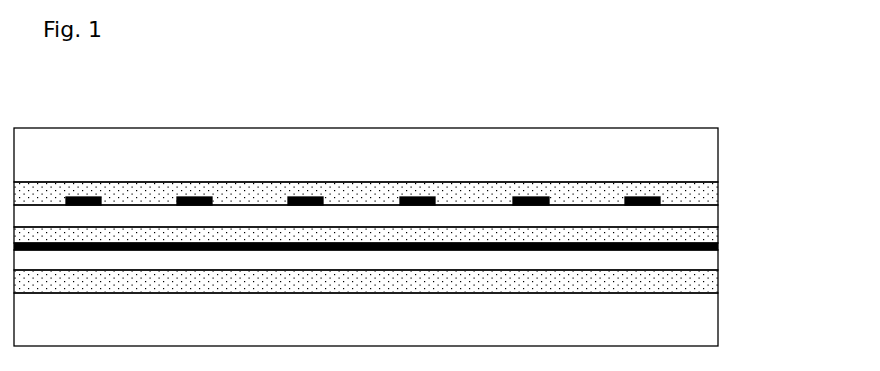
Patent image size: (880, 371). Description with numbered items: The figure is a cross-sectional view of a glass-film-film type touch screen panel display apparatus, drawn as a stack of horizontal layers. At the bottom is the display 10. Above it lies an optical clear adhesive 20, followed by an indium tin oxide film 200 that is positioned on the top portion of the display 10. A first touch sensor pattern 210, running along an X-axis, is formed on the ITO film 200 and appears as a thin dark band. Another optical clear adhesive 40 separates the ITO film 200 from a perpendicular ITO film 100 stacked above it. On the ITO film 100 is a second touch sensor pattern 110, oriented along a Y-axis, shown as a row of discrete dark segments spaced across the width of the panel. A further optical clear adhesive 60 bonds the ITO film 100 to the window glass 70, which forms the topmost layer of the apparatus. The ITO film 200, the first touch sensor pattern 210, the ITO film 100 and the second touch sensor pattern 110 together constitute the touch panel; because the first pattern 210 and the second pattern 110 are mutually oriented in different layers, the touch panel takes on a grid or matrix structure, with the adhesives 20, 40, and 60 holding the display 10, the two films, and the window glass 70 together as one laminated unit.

The display 10 is at (715, 318).
The optical clear adhesive 20 is at (715, 280).
The ITO film 200 is at (715, 258).
The first touch sensor pattern 210 is at (718, 244).
The optical clear adhesive 40 is at (710, 235).
The ITO film 100 is at (715, 216).
The second touch sensor pattern 110 is at (638, 197).
The optical clear adhesive 60 is at (710, 195).
The window glass 70 is at (710, 157).